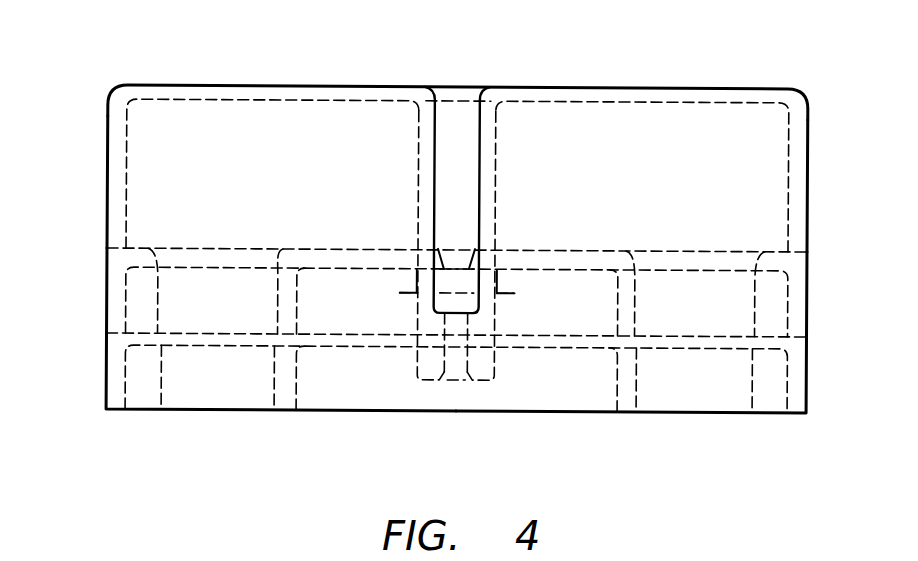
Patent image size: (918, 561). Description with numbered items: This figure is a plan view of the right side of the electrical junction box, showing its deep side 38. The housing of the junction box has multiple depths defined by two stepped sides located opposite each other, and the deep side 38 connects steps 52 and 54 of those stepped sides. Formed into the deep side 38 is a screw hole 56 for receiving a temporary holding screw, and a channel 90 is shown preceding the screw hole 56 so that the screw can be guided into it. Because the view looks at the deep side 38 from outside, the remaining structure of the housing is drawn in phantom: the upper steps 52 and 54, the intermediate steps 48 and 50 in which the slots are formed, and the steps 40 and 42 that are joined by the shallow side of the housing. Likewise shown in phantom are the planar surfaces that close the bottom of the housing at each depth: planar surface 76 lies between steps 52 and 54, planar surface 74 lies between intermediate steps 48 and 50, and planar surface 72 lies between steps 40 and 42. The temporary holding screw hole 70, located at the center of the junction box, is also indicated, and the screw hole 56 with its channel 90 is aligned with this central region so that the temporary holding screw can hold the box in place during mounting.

The deep side 38 is at (278, 207).
The step 40 is at (117, 378).
The step 42 is at (798, 381).
The intermediate step 48 is at (117, 287).
The intermediate step 50 is at (798, 297).
The step 52 is at (107, 184).
The step 54 is at (807, 174).
The screw hole 56 is at (453, 382).
The temporary holding screw hole 70 is at (457, 252).
The planar surface 72 is at (720, 336).
The planar surface 74 is at (705, 252).
The planar surface 76 is at (317, 87).
The channel 90 is at (453, 122).